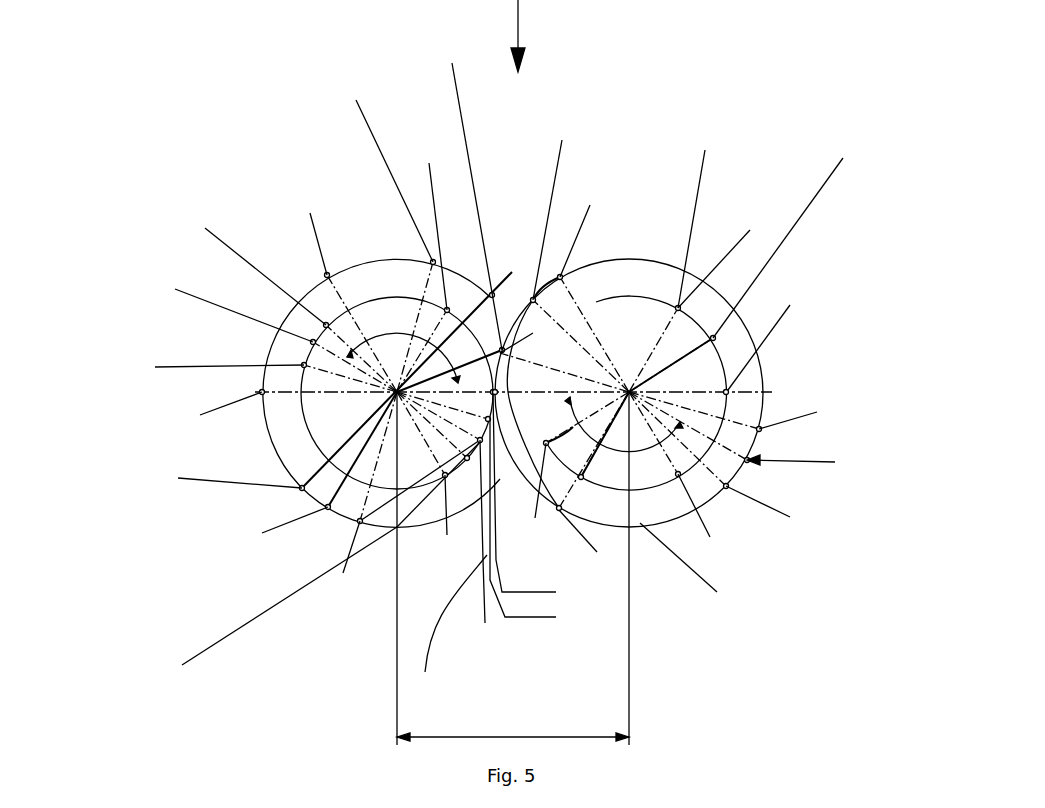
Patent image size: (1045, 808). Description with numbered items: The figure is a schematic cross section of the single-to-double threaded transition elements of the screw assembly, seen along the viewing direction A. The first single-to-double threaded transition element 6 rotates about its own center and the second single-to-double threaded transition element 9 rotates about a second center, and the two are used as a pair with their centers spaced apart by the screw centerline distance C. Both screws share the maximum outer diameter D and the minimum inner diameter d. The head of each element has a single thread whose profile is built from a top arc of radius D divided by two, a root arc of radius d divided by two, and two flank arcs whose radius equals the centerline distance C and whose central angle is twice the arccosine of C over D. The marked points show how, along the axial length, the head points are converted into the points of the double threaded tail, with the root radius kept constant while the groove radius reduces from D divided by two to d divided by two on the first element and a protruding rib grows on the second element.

The first single-to-double threaded transition element 6 is at (320, 307).
The second single-to-double threaded transition element 9 is at (745, 423).
The viewing direction arrow A is at (529, 36).
The screw centerline distance C is at (513, 725).
The maximum outer diameter D is at (355, 393).
The minimum inner diameter d is at (325, 393).